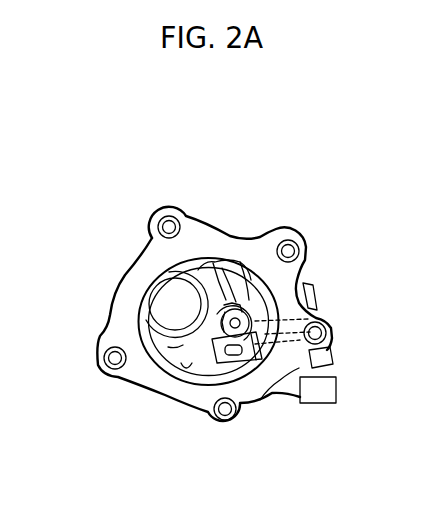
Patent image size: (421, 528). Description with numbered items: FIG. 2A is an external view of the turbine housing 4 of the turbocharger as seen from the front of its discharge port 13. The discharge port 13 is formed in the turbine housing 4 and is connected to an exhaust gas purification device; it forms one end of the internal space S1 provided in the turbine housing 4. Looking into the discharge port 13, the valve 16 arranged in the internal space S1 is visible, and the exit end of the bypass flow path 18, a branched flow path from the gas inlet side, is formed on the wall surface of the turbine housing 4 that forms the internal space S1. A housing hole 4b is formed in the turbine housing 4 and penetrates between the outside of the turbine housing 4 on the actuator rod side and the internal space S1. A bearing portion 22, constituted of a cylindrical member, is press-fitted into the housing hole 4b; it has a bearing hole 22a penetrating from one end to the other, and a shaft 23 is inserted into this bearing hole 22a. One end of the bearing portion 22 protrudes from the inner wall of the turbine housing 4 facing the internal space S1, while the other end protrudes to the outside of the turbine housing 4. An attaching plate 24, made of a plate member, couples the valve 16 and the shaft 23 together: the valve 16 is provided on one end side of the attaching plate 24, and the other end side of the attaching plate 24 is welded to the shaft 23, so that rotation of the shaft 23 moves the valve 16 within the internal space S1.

The turbine housing 4 is at (176, 164).
The housing hole 4b is at (302, 363).
The discharge port 13 is at (188, 372).
The valve 16 is at (207, 302).
The bypass flow path 18 is at (260, 300).
The bearing portion 22 is at (268, 327).
The bearing hole 22a is at (278, 355).
The shaft 23 is at (240, 356).
The attaching plate 24 is at (210, 337).
The internal space S1 is at (181, 346).